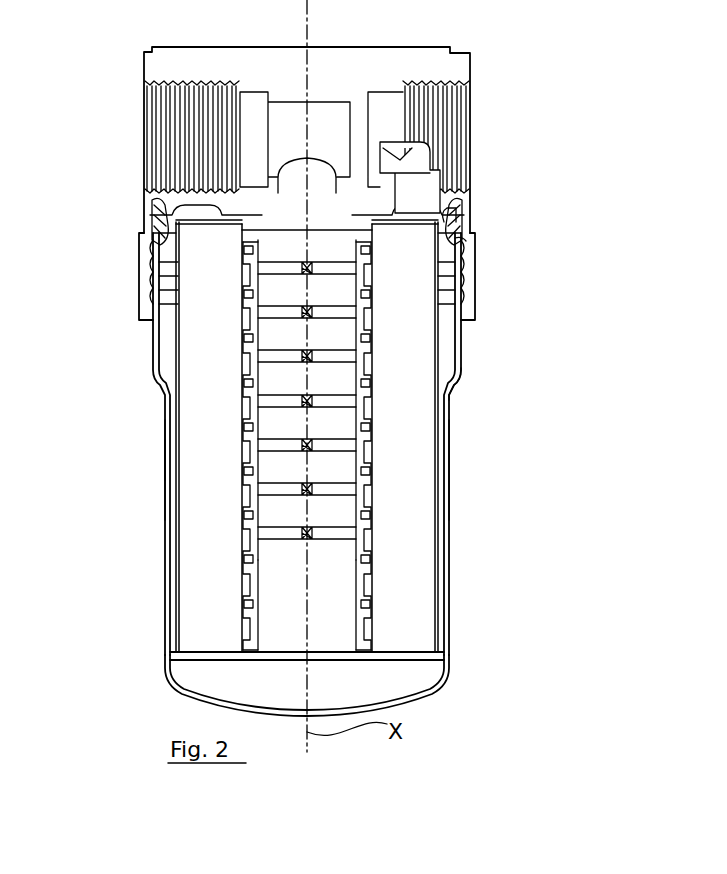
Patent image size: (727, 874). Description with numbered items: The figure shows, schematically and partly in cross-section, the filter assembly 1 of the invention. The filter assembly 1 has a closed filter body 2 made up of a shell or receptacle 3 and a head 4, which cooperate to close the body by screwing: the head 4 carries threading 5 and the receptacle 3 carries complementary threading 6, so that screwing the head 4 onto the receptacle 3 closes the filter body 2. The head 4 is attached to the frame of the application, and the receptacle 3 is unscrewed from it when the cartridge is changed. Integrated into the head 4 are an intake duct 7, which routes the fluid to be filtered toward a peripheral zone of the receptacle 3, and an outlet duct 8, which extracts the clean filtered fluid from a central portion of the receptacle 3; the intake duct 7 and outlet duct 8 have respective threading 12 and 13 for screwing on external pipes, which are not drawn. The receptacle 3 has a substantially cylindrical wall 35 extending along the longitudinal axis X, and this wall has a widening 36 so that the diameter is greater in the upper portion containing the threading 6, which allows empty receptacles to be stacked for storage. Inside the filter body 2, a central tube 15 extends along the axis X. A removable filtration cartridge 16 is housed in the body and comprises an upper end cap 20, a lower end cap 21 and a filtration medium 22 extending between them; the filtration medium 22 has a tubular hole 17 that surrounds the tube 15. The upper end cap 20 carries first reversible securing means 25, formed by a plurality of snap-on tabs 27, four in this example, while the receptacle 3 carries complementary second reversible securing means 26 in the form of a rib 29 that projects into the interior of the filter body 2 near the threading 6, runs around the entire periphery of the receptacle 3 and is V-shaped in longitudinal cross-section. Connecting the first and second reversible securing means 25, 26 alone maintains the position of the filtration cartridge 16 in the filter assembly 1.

The filter assembly 1 is at (155, 412).
The filter body 2 is at (457, 405).
The receptacle 3 is at (326, 476).
The head 4 is at (467, 72).
The threading 5 is at (463, 262).
The complementary threading 6 is at (467, 270).
The intake duct 7 is at (472, 135).
The outlet duct 8 is at (150, 128).
The threading 12 is at (470, 103).
The threading 13 is at (152, 146).
The tube 15 is at (375, 580).
The filtration cartridge 16 is at (188, 503).
The tubular hole 17 is at (372, 526).
The upper end cap 20 is at (460, 222).
The lower end cap 21 is at (443, 668).
The filtration medium 22 is at (197, 580).
The first reversible securing means 25 is at (475, 228).
The second reversible securing means 26 is at (462, 237).
The snap-on tabs 27 is at (160, 247).
The rib 29 is at (463, 248).
The substantially cylindrical wall 35 is at (158, 457).
The widening 36 is at (455, 377).